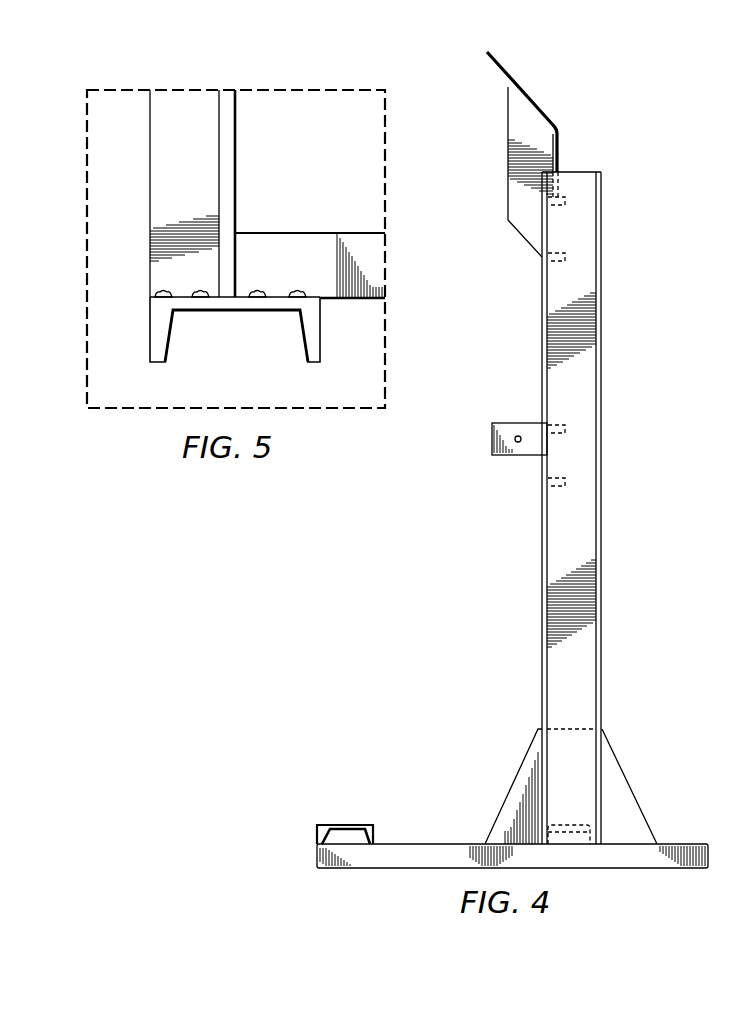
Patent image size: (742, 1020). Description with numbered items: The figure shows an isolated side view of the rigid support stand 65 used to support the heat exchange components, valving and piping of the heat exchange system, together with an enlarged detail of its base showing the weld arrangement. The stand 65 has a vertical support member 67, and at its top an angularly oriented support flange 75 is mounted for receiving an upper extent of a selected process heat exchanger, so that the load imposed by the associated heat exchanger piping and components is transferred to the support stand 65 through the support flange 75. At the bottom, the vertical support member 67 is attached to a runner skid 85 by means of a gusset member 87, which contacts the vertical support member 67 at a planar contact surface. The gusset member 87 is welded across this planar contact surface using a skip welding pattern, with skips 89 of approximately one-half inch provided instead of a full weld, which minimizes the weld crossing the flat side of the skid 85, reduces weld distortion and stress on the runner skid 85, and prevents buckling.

In FIG. 4, the rigid support stand 65 is at (603, 455).
In FIG. 5, the vertical support member 67 is at (150, 186).
In FIG. 4, the support flange 75 is at (539, 103).
In FIG. 5, the runner skid 85 is at (321, 325).
In FIG. 4, the runner skid 85 is at (443, 844).
In FIG. 4, the gusset member 87 is at (632, 785).
In FIG. 5, the skips 89 is at (297, 292).